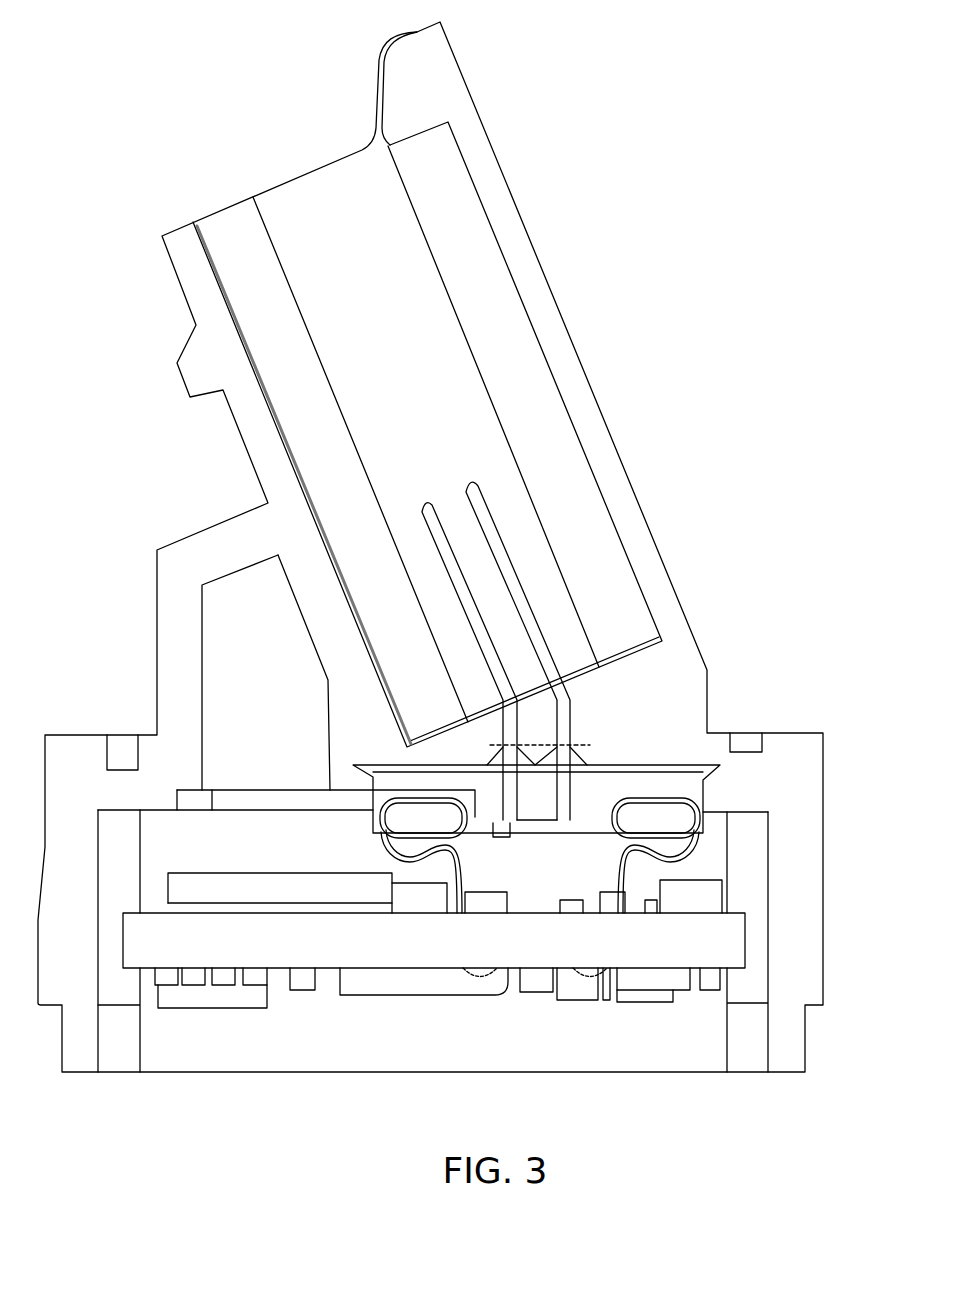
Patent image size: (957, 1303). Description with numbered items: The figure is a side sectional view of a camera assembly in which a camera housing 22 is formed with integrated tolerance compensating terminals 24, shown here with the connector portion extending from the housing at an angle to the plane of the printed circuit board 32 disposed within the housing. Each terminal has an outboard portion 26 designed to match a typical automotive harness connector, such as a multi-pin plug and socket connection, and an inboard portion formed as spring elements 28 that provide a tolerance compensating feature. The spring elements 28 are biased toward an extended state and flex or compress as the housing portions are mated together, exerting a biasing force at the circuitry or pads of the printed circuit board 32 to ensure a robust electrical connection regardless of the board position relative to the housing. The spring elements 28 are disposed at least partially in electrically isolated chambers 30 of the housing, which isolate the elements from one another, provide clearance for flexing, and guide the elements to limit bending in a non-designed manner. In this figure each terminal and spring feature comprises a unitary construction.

The camera housing 22 is at (688, 405).
The tolerance compensating terminals 24 is at (575, 712).
The outboard portion of the terminals 26 is at (425, 503).
The inboard spring elements 28 is at (450, 855).
The electrically isolated chambers 30 is at (700, 800).
The printed circuit board 32 is at (333, 945).